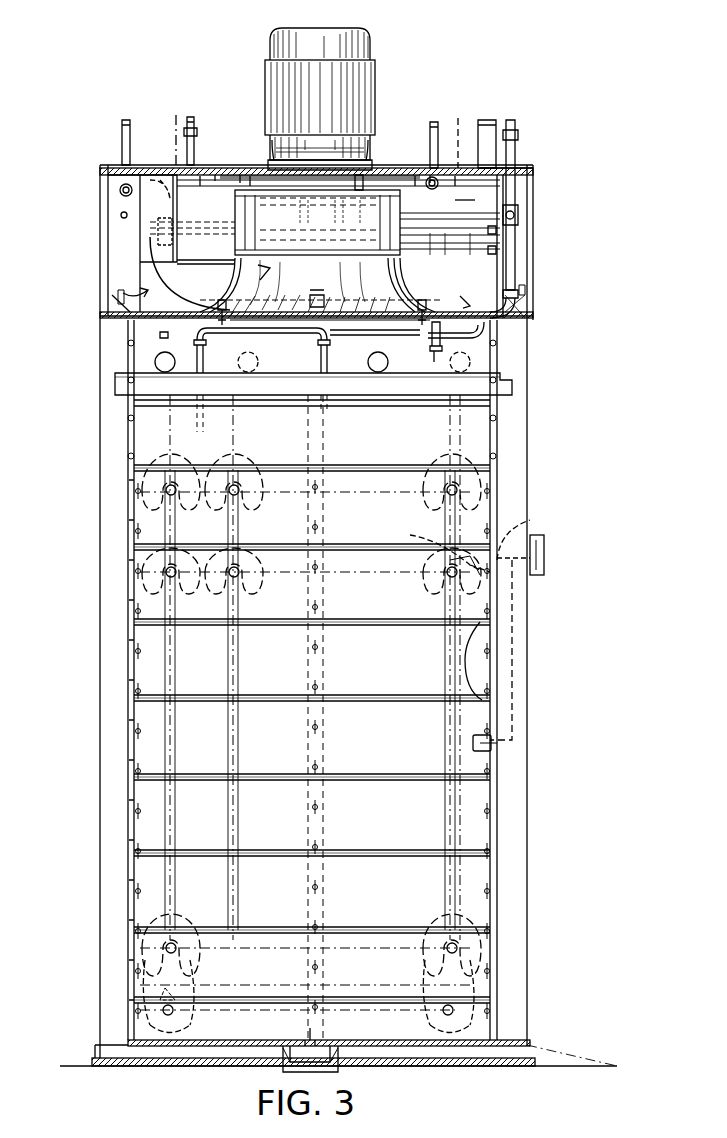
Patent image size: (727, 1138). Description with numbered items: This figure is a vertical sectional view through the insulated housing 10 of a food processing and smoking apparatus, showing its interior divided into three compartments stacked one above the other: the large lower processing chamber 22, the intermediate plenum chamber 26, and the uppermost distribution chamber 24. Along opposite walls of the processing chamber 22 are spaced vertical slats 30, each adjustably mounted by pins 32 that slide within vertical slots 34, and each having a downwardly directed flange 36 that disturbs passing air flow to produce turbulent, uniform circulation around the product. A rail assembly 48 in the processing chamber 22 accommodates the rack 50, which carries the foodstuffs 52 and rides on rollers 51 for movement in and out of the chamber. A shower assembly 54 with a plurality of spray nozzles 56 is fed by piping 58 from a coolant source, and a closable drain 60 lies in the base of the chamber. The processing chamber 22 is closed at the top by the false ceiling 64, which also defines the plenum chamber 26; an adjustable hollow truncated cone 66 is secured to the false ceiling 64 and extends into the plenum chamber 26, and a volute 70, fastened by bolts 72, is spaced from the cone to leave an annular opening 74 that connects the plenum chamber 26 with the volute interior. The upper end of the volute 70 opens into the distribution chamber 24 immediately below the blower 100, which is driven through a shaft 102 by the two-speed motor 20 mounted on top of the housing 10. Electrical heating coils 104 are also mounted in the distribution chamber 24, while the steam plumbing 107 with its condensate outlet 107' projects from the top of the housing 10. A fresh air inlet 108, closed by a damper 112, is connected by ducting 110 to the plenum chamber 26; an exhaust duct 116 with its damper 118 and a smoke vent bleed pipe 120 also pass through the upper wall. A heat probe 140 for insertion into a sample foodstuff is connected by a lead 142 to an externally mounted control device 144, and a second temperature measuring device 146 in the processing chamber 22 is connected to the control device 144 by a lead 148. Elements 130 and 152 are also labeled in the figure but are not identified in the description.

The housing 10 is at (602, 145).
The two-speed motor 20 is at (363, 40).
The processing chamber 22 is at (142, 519).
The distribution chamber 24 is at (222, 188).
The plenum chamber 26 is at (142, 294).
The vertical slats 30 is at (476, 485).
The pins 32 is at (495, 528).
The vertical slots 34 is at (492, 600).
The downwardly directed flange 36 is at (492, 700).
The rail assembly 48 is at (505, 388).
The rack 50 is at (330, 445).
The rollers 51 is at (183, 1045).
The foodstuffs 52 is at (255, 505).
The shower assembly 54 is at (330, 350).
The spray nozzles 56 is at (300, 410).
The piping 58 is at (516, 133).
The closable drain 60 is at (340, 1068).
The false ceiling 64 is at (437, 322).
The adjustable hollow truncated cone 66 is at (440, 320).
The volute 70 is at (368, 278).
The bolts 72 is at (222, 308).
The annular opening 74 is at (400, 312).
The blower 100 is at (392, 212).
The shaft 102 is at (360, 175).
The electrical heating coils 104 is at (460, 266).
The plumbing 107 is at (417, 144).
The condensate outlet 107' is at (99, 169).
The fresh air inlet 108 is at (150, 180).
The ducting 110 is at (177, 205).
The damper 112 is at (194, 128).
The exhaust duct 116 is at (520, 175).
The damper 118 is at (463, 130).
The smoke vent bleed pipe 120 is at (500, 108).
The shaft 130 is at (475, 217).
The heat probe 140 is at (425, 532).
The lead 142 is at (535, 522).
The control device 144 is at (540, 548).
The second temperature measuring device 146 is at (490, 743).
The lead 148 is at (512, 690).
The vent fitting 152 is at (194, 142).